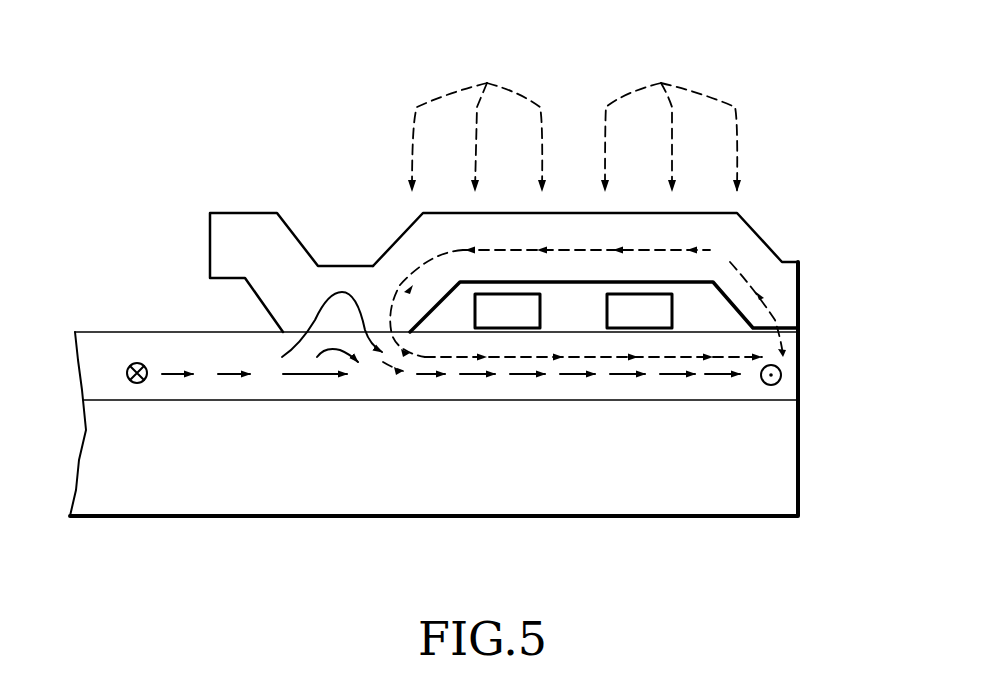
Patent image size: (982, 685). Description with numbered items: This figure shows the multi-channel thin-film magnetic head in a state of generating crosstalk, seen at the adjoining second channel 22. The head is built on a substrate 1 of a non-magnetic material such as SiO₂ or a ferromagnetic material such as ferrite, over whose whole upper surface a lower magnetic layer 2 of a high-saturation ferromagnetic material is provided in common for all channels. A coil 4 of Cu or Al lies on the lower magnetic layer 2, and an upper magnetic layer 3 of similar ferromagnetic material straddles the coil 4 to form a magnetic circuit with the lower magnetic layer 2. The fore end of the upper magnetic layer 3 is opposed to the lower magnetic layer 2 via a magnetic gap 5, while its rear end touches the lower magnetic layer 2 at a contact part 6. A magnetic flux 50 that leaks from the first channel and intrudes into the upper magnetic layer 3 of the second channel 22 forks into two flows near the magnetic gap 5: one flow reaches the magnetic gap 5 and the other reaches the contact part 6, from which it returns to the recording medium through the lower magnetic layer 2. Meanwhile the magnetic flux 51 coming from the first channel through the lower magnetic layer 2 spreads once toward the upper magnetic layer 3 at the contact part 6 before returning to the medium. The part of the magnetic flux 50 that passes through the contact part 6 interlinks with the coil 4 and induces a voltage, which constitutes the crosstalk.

The substrate 1 is at (788, 460).
The lower magnetic layer 2 is at (788, 387).
The upper magnetic layer 3 is at (788, 303).
The coil 4 is at (515, 318).
The magnetic gap 5 is at (790, 331).
The contact part 6 is at (297, 328).
The second channel 22 is at (781, 245).
The magnetic flux 50 is at (762, 192).
The magnetic flux 51 is at (427, 367).